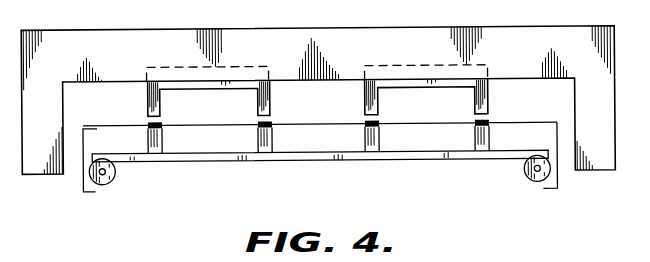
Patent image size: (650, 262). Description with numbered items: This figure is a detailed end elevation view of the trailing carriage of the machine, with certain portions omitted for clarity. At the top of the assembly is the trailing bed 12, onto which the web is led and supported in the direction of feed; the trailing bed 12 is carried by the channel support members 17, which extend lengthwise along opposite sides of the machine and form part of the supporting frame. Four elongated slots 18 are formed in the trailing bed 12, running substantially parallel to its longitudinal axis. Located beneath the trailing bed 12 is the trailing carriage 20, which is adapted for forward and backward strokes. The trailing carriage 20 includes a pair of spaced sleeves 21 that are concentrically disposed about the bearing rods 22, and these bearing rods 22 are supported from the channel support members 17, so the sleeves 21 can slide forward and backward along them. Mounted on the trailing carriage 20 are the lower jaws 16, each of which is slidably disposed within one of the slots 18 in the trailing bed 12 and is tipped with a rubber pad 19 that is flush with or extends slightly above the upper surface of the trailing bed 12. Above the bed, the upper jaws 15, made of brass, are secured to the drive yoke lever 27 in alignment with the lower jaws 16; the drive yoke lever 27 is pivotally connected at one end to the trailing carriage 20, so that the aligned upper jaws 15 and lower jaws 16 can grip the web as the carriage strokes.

The trailing bed 12 is at (530, 121).
The drive yoke lever 27 is at (332, 42).
The upper jaws 15 is at (488, 100).
The elongated slots 18 is at (472, 119).
The rubber pad 19 is at (489, 120).
The lower jaws 16 is at (483, 144).
The trailing carriage 20 is at (214, 159).
The channel support members 17 is at (557, 178).
The sleeves 21 is at (528, 171).
The bearing rods 22 is at (536, 174).